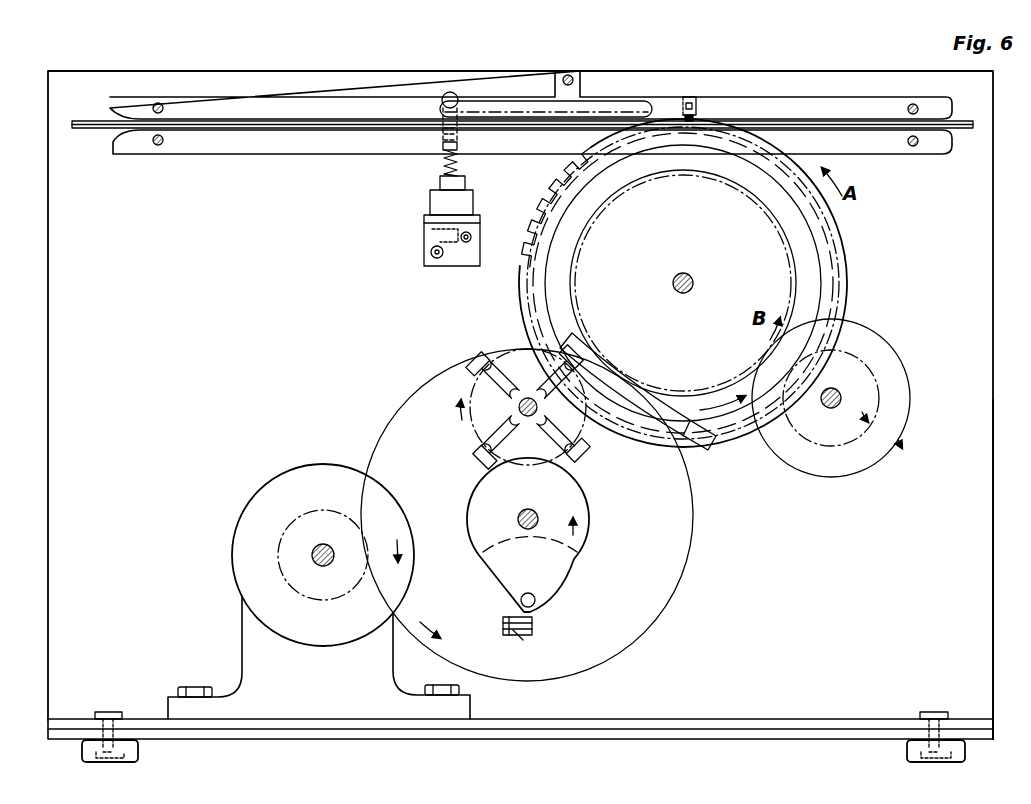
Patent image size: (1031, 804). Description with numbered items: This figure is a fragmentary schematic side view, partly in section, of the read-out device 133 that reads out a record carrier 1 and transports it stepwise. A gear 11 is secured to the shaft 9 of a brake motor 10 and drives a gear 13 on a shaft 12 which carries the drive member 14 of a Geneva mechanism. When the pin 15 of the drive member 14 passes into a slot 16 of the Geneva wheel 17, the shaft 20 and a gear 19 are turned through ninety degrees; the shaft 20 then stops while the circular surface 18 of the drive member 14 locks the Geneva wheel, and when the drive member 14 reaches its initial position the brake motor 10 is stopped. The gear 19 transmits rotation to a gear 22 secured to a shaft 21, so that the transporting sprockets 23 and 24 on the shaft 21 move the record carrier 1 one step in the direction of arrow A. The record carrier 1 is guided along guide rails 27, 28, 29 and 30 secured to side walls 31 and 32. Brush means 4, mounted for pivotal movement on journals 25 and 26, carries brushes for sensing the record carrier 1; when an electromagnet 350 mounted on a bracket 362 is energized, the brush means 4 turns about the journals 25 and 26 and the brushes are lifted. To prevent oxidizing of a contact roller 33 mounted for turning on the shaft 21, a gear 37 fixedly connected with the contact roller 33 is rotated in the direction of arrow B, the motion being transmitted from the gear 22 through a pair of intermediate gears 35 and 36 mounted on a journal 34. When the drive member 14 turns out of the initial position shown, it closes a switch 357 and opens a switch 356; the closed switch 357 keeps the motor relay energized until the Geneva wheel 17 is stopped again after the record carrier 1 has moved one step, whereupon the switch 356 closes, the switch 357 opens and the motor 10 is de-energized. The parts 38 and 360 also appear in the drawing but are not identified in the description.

The record carrier 1 is at (972, 124).
The brush means 4 is at (693, 103).
The shaft 9 is at (301, 555).
The brake motor 10 is at (256, 642).
The gear 11 is at (293, 525).
The shaft 12 is at (518, 524).
The gear 13 is at (626, 652).
The drive member 14 is at (548, 573).
The pin 15 is at (521, 600).
The slot 16 is at (585, 466).
The Geneva wheel 17 is at (598, 452).
The circular surface 18 is at (540, 535).
The gear 19 is at (470, 425).
The shaft of Geneva wheel 20 is at (563, 401).
The shaft 21 is at (693, 283).
The gear 22 is at (702, 442).
The transporting sprocket 23 is at (842, 401).
The transporting sprocket 24 is at (842, 401).
The journal 25 is at (546, 133).
The journal 26 is at (566, 86).
The guide rail 27 is at (531, 76).
The guide rail 28 is at (534, 162).
The guide rail 29 is at (893, 104).
The guide rail 30 is at (900, 152).
The side wall 31 is at (1005, 569).
The side wall 32 is at (980, 638).
The contact roller 33 is at (830, 292).
The journal 34 is at (833, 410).
The intermediate gear 35 is at (842, 401).
The intermediate gear 36 is at (885, 428).
The gear 37 is at (742, 385).
The base plate 38 is at (688, 730).
The read-out device 133 is at (225, 315).
The electromagnet 350 is at (438, 201).
The switch 356 is at (516, 634).
The switch 357 is at (533, 623).
The adjusting screw 360 is at (440, 160).
The bracket 362 is at (430, 239).